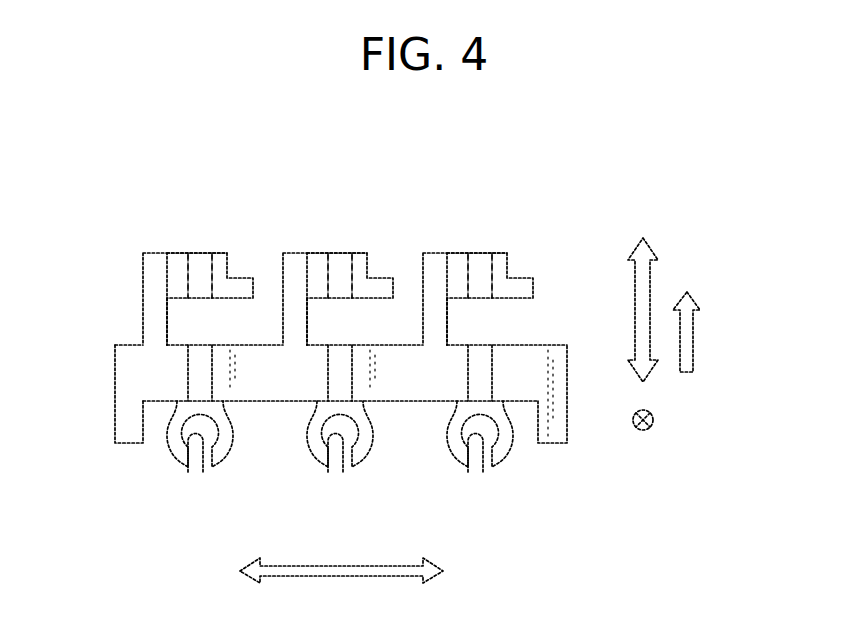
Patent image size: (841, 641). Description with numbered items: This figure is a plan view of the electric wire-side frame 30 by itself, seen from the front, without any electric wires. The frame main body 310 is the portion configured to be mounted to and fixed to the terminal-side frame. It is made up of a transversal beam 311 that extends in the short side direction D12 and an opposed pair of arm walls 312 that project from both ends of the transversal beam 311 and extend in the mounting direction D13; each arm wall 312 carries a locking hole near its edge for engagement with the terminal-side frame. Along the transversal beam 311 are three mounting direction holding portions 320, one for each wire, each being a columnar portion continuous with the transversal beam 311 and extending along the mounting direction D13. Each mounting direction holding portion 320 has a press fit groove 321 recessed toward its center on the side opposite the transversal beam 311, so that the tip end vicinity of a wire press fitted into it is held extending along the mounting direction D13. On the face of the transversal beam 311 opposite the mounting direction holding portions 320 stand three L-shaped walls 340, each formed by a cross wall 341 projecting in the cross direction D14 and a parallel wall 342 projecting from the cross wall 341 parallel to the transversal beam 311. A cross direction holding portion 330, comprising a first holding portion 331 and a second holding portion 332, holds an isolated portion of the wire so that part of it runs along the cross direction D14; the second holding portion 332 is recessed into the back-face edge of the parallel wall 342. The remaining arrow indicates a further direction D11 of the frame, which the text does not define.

The electric wire-side frame 30 is at (101, 388).
The frame main body 310 is at (121, 344).
The transversal beam 311 is at (547, 344).
The arm walls 312 is at (113, 424).
The mounting direction holding portion 320 is at (168, 450).
The press fit groove 321 is at (197, 446).
The cross direction holding portion 330 is at (270, 135).
The first holding portion 331 is at (211, 373).
The second holding portion 332 is at (200, 252).
The L-shaped wall 340 is at (695, 190).
The cross wall 341 is at (172, 313).
The parallel wall 342 is at (177, 252).
The direction D11 is at (650, 283).
The short side direction D12 is at (340, 578).
The mounting direction D13 is at (655, 420).
The cross direction D14 is at (695, 330).